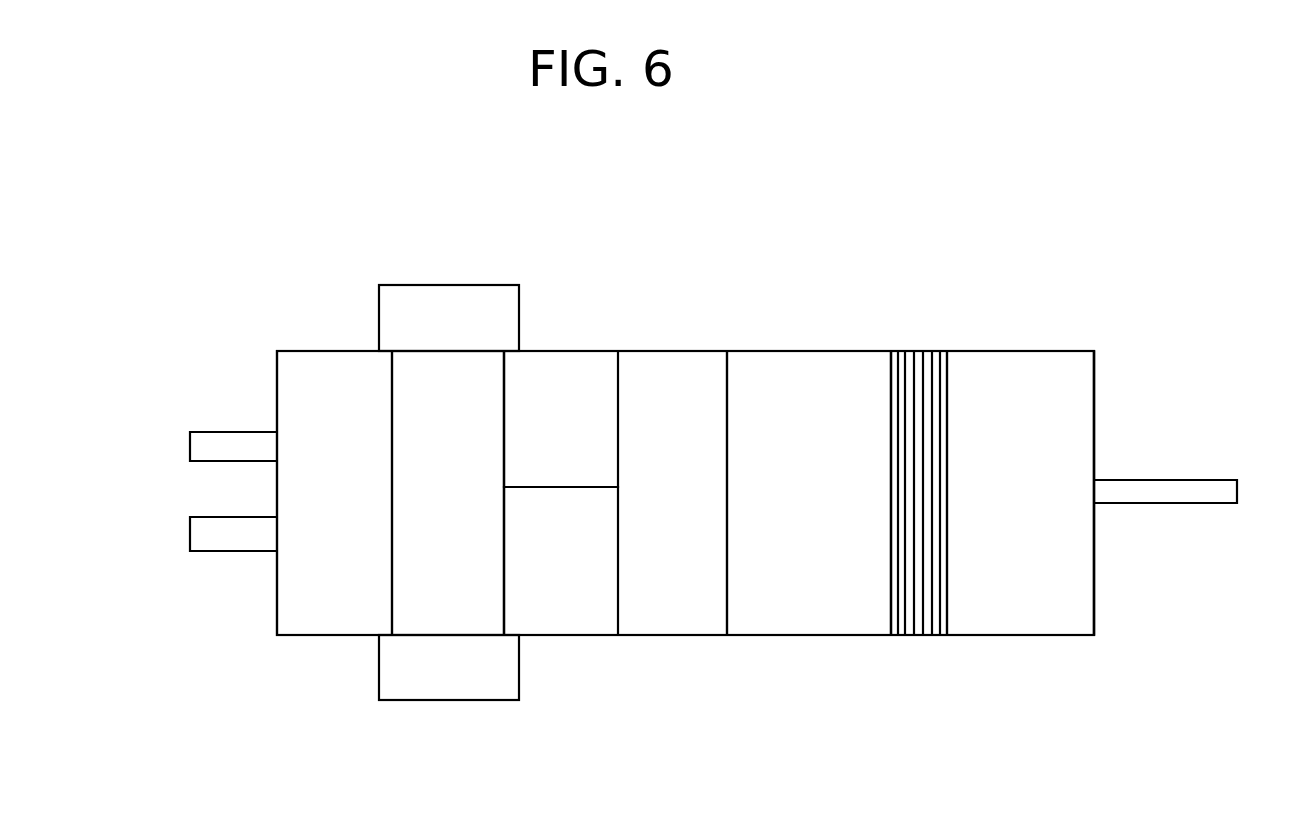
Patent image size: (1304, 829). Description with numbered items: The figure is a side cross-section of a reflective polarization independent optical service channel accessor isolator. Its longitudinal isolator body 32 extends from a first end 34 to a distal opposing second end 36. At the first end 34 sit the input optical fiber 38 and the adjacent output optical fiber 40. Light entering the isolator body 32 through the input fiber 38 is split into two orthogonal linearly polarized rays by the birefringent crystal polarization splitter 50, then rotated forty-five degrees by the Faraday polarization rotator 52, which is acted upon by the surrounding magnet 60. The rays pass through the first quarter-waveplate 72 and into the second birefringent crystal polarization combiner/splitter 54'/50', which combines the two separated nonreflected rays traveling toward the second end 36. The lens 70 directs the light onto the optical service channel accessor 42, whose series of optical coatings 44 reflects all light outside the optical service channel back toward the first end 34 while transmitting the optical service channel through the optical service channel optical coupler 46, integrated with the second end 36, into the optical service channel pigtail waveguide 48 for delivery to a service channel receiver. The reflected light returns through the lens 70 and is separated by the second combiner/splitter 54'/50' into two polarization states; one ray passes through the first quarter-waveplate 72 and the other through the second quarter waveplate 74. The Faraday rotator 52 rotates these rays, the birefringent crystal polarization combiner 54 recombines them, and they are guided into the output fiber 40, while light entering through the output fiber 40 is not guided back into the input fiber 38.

The isolator longitudinal body 32 is at (683, 269).
The first end 34 is at (283, 306).
The second end 36 is at (935, 279).
The input optical fiber 38 is at (169, 446).
The output optical fiber 40 is at (173, 535).
The optical service channel accessor 42 is at (1029, 684).
The series of optical coatings 44 is at (922, 654).
The optical service channel optical coupler 46 is at (1094, 592).
The optical service channel pigtail waveguide 48 is at (1205, 503).
The birefringent crystal polarization splitter 50 is at (334, 433).
The second birefringent crystal polarization splitter 50' is at (716, 421).
The Faraday polarization rotator 52 is at (460, 637).
The birefringent crystal polarization combiner 54 is at (315, 699).
The second birefringent crystal polarization combiner 54' is at (672, 684).
The magnet 60 is at (447, 285).
The lens 70 is at (810, 636).
The first quarter-waveplate 72 is at (560, 636).
The second quarter waveplate 74 is at (563, 350).